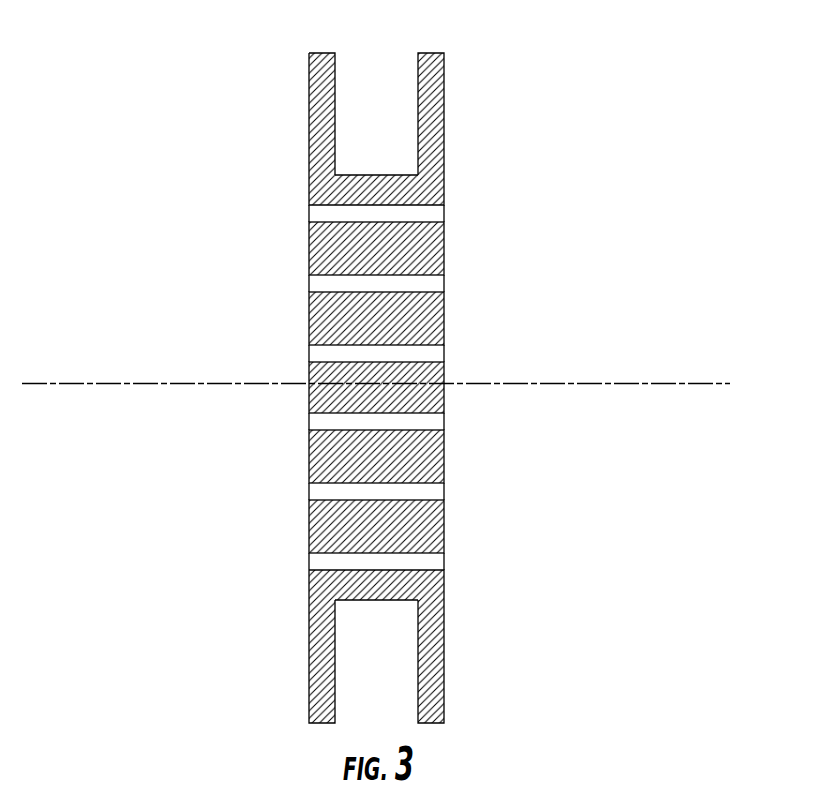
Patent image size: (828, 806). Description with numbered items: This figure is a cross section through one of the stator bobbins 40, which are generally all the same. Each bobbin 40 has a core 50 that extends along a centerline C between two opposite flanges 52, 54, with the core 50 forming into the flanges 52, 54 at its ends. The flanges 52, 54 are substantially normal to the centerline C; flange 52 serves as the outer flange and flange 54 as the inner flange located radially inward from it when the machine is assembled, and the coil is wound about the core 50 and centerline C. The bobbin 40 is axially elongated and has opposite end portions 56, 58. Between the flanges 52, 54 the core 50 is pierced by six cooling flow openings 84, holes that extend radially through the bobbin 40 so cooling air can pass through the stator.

The bobbin 40 is at (562, 104).
The core 50 is at (375, 600).
The flange 52 is at (309, 90).
The flange 54 is at (444, 90).
The end portion 56 is at (309, 185).
The end portion 58 is at (444, 580).
The cooling flow opening 84 is at (432, 283).
The centerline C is at (650, 384).